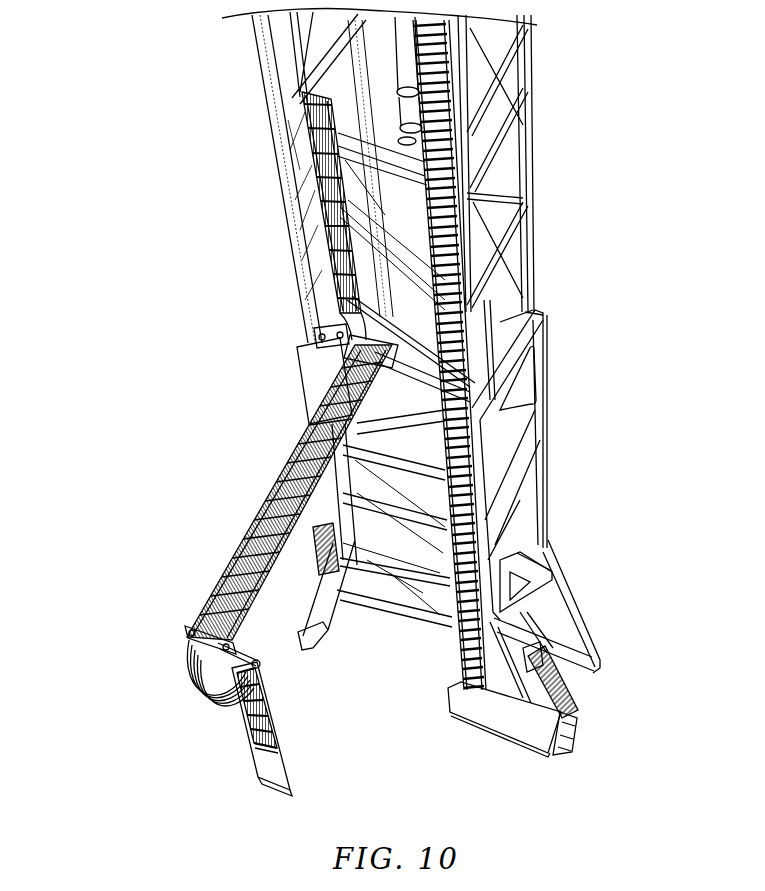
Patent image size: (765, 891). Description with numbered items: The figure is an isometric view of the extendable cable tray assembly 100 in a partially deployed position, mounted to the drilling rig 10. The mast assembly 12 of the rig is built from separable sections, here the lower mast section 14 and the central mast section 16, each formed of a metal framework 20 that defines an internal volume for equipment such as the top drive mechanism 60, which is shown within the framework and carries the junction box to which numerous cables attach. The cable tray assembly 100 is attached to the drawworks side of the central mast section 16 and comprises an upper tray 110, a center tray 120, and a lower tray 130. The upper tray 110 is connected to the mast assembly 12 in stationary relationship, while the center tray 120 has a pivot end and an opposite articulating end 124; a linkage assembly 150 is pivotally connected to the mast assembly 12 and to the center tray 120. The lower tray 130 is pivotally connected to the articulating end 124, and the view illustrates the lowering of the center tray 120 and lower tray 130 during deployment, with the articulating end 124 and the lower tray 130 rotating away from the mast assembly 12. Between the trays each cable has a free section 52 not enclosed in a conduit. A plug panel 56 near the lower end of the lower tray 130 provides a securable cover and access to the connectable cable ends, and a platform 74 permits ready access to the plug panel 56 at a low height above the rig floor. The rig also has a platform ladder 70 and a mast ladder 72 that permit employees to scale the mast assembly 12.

The drilling rig 10 is at (96, 160).
The mast assembly 12 is at (556, 246).
The lower mast section 14 is at (300, 403).
The central mast section 16 is at (262, 78).
The metal framework 20 is at (521, 138).
The free section 52 is at (196, 688).
The plug panel 56 is at (285, 770).
The top drive mechanism 60 is at (398, 63).
The platform ladder 70 is at (567, 700).
The mast ladder 72 is at (483, 452).
The platform 74 is at (515, 737).
The cable tray assembly 100 is at (207, 482).
The upper tray 110 is at (300, 103).
The center tray 120 is at (262, 535).
The articulating end 124 is at (200, 615).
The lower tray 130 is at (243, 730).
The linkage assembly 150 is at (318, 340).